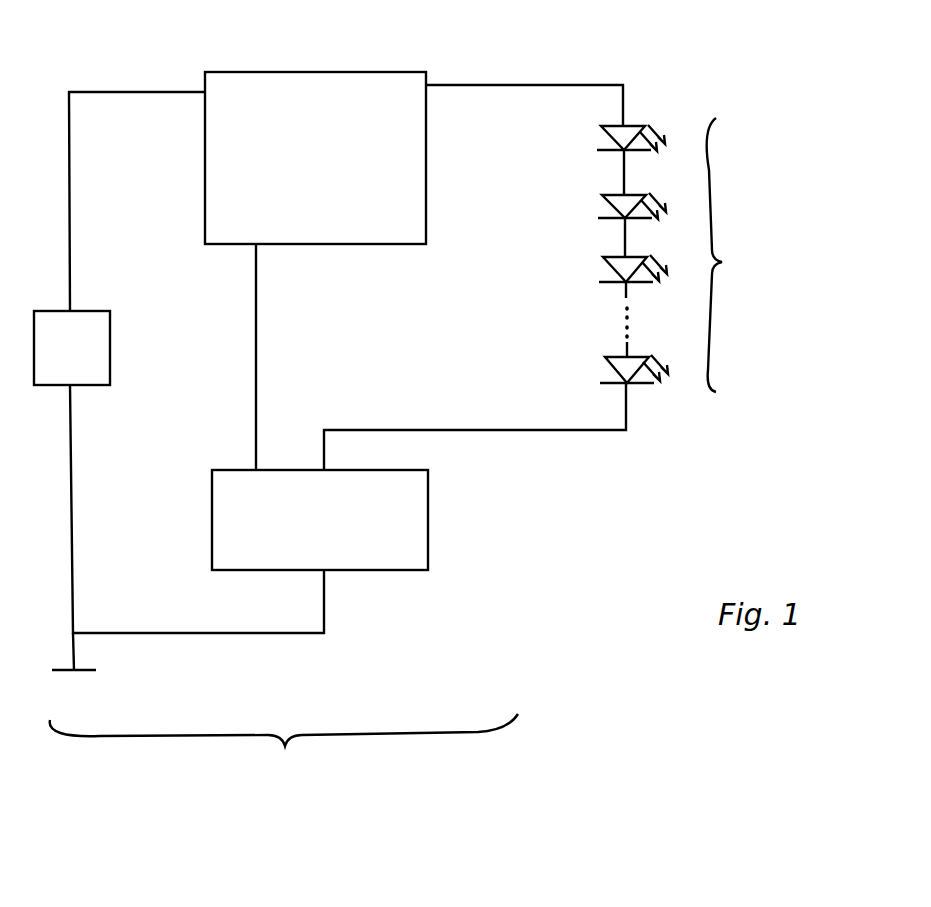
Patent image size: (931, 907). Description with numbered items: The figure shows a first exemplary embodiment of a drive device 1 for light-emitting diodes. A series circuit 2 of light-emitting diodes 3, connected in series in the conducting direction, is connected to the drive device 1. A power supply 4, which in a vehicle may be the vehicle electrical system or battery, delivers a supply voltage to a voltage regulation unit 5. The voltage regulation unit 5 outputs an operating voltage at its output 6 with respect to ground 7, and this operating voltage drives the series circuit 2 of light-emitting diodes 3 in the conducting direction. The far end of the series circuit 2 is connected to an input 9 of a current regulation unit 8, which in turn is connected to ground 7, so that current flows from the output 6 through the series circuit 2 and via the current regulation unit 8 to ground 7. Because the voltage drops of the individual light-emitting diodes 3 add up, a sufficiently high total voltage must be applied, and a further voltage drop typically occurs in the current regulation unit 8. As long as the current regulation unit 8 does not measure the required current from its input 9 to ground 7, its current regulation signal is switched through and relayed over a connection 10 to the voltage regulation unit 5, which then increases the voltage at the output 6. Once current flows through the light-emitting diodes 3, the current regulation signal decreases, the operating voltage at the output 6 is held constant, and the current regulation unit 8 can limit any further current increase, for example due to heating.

The drive device 1 is at (284, 756).
The series circuit 2 is at (728, 255).
The light-emitting diode 3 is at (632, 130).
The power supply 4 is at (84, 366).
The voltage regulation unit 5 is at (312, 174).
The output 6 is at (470, 85).
The ground 7 is at (63, 668).
The current regulation unit 8 is at (328, 536).
The input 9 is at (436, 430).
The connection 10 is at (256, 350).